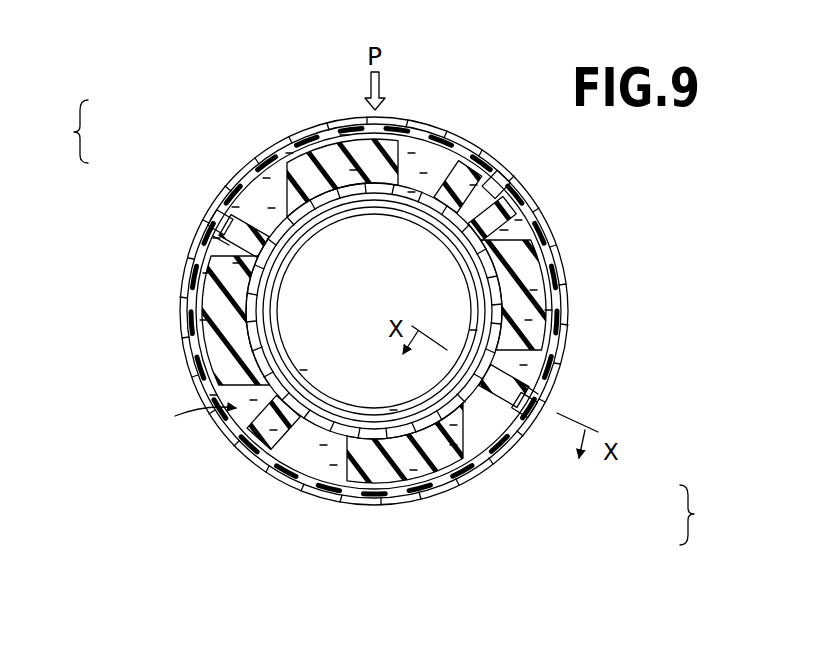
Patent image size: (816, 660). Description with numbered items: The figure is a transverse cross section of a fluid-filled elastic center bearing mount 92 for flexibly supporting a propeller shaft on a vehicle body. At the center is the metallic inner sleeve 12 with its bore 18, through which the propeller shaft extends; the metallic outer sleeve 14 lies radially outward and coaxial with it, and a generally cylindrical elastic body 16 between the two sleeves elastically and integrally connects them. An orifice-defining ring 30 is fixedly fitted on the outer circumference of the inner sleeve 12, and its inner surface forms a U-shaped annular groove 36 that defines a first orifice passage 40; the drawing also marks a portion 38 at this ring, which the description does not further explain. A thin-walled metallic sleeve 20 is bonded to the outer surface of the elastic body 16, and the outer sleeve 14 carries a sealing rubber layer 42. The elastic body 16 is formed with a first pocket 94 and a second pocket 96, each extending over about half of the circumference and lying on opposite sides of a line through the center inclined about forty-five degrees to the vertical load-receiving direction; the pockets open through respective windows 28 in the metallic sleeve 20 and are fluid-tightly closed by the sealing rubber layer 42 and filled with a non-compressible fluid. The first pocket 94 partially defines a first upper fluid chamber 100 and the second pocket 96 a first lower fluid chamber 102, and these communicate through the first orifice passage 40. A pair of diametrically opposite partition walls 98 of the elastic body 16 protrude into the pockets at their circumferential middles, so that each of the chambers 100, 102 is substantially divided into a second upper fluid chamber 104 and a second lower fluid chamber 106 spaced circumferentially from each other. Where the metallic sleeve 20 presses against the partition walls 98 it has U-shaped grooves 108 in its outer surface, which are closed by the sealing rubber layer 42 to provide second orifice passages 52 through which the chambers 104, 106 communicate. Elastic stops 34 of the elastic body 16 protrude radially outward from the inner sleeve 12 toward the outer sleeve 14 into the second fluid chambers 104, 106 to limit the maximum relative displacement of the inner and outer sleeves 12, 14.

The inner sleeve 12 is at (303, 238).
The outer sleeve 14 is at (305, 493).
The elastic body 16 is at (190, 411).
The bore 18 is at (284, 343).
The metallic sleeve 20 is at (500, 186).
The window 28 is at (235, 428).
The orifice-defining ring 30 is at (462, 244).
The elastic stop 34 is at (360, 152).
The U-shaped annular groove 36 is at (470, 372).
The segment 38 is at (407, 213).
The first orifice passage 40 is at (266, 308).
The sealing rubber layer 42 is at (443, 473).
The second orifice passage 52 is at (224, 236).
The center bearing mount 92 is at (489, 66).
The first pocket 94 is at (456, 195).
The second pocket 96 is at (490, 218).
The partition wall 98 is at (258, 232).
The first upper fluid chamber 100 is at (63, 131).
The first lower fluid chamber 102 is at (709, 515).
The second upper fluid chamber 104 is at (305, 147).
The second lower fluid chamber 106 is at (200, 302).
The U-shaped groove 108 is at (226, 222).